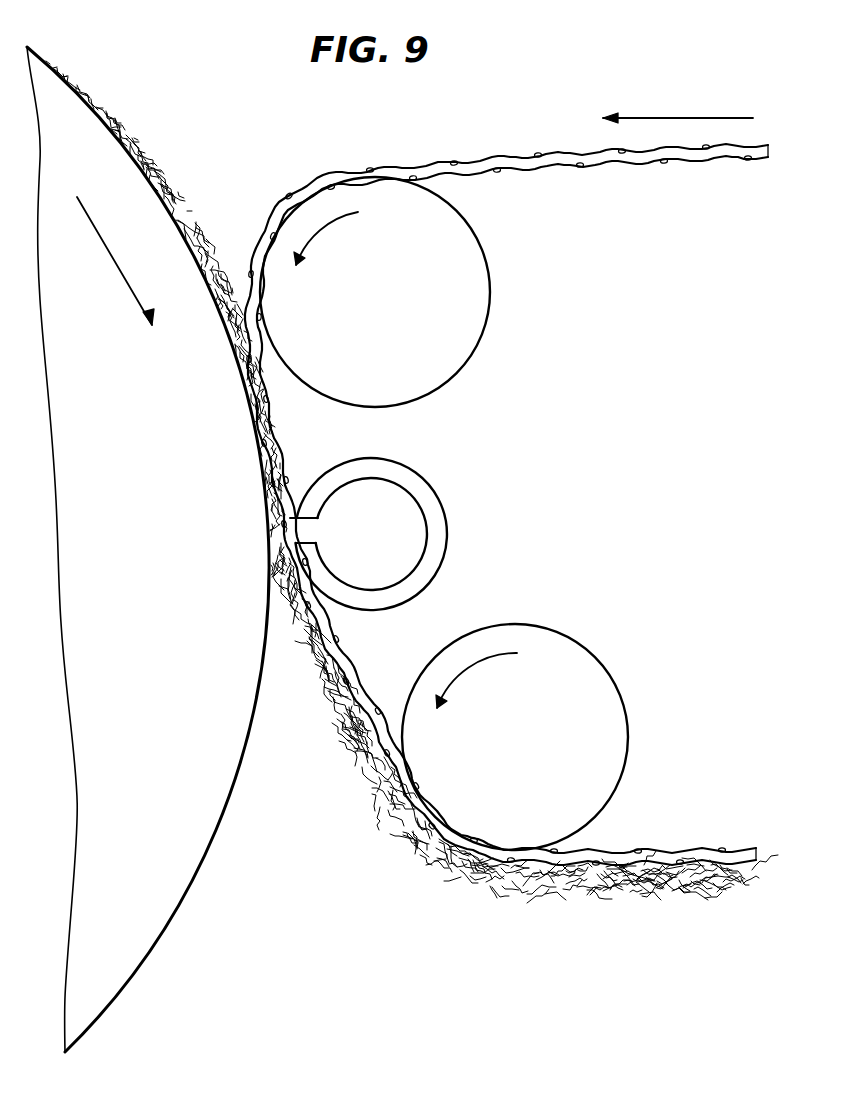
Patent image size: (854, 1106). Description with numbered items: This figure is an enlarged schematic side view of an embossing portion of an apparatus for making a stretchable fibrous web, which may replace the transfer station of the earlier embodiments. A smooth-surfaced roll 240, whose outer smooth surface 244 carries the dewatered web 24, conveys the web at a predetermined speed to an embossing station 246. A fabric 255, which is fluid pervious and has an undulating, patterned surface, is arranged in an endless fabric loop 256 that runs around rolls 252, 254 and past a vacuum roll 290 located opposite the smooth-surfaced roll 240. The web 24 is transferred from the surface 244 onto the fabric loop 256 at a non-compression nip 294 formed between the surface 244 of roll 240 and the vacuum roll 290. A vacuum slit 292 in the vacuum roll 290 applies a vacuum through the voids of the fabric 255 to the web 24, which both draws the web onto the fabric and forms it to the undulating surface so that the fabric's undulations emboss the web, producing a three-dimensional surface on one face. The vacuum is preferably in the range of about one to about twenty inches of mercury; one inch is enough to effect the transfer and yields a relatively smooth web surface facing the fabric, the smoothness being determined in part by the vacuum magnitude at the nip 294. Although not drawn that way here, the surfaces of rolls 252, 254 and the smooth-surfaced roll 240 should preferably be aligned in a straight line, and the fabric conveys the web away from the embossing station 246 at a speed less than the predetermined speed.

The dewatered web 24 is at (161, 541).
The smooth-surfaced roll 240 is at (125, 173).
The outer smooth surface 244 is at (248, 733).
The embossing station 246 is at (443, 518).
The roll 252 is at (613, 707).
The roll 254 is at (477, 272).
The fabric 255 is at (630, 160).
The fabric loop 256 is at (437, 162).
The vacuum roll 290 is at (440, 527).
The vacuum slit 292 is at (303, 527).
The non-compression nip 294 is at (258, 544).